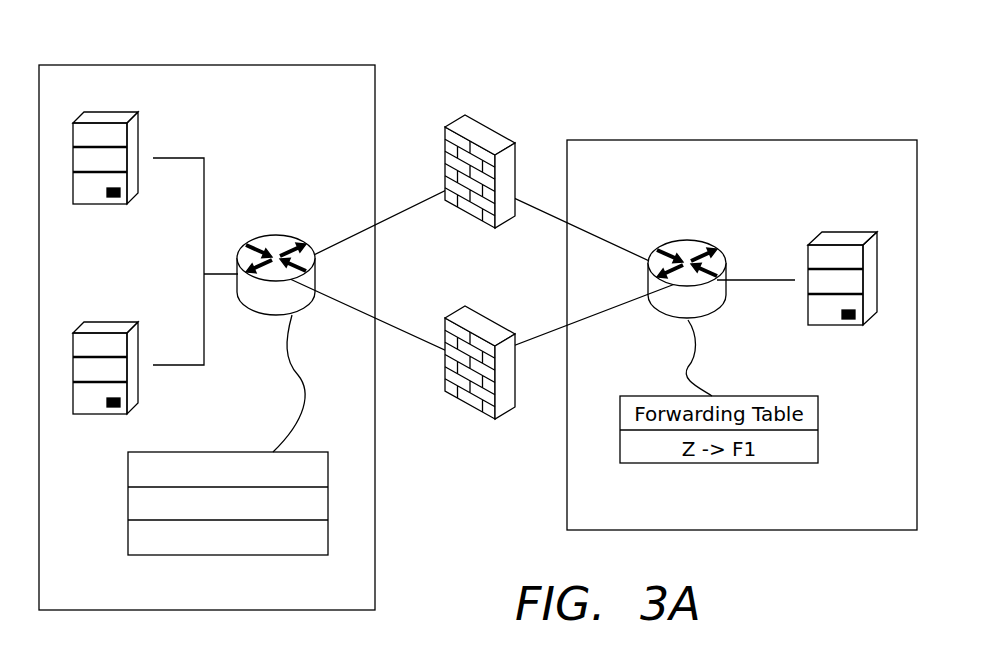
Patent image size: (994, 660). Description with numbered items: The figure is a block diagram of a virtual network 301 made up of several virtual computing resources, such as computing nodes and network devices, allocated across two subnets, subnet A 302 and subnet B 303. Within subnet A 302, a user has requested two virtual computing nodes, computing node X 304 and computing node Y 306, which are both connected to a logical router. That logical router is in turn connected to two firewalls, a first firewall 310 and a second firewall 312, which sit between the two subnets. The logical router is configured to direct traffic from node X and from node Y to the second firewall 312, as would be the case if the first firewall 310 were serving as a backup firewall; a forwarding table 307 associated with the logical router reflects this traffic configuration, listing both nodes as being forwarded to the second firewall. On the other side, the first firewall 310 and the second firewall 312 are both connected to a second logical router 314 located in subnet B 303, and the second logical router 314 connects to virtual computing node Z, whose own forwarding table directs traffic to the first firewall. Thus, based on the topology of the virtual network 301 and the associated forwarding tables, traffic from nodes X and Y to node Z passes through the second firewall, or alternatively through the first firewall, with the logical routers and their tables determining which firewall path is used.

The virtual network 301 is at (584, 49).
The subnet A 302 is at (154, 596).
The subnet B 303 is at (768, 510).
The computing node X 304 is at (107, 117).
The computing node Y 306 is at (110, 329).
The forwarding table 307 is at (128, 507).
The firewall F1 310 is at (482, 325).
The firewall F2 312 is at (482, 135).
The second logical router 314 is at (682, 247).